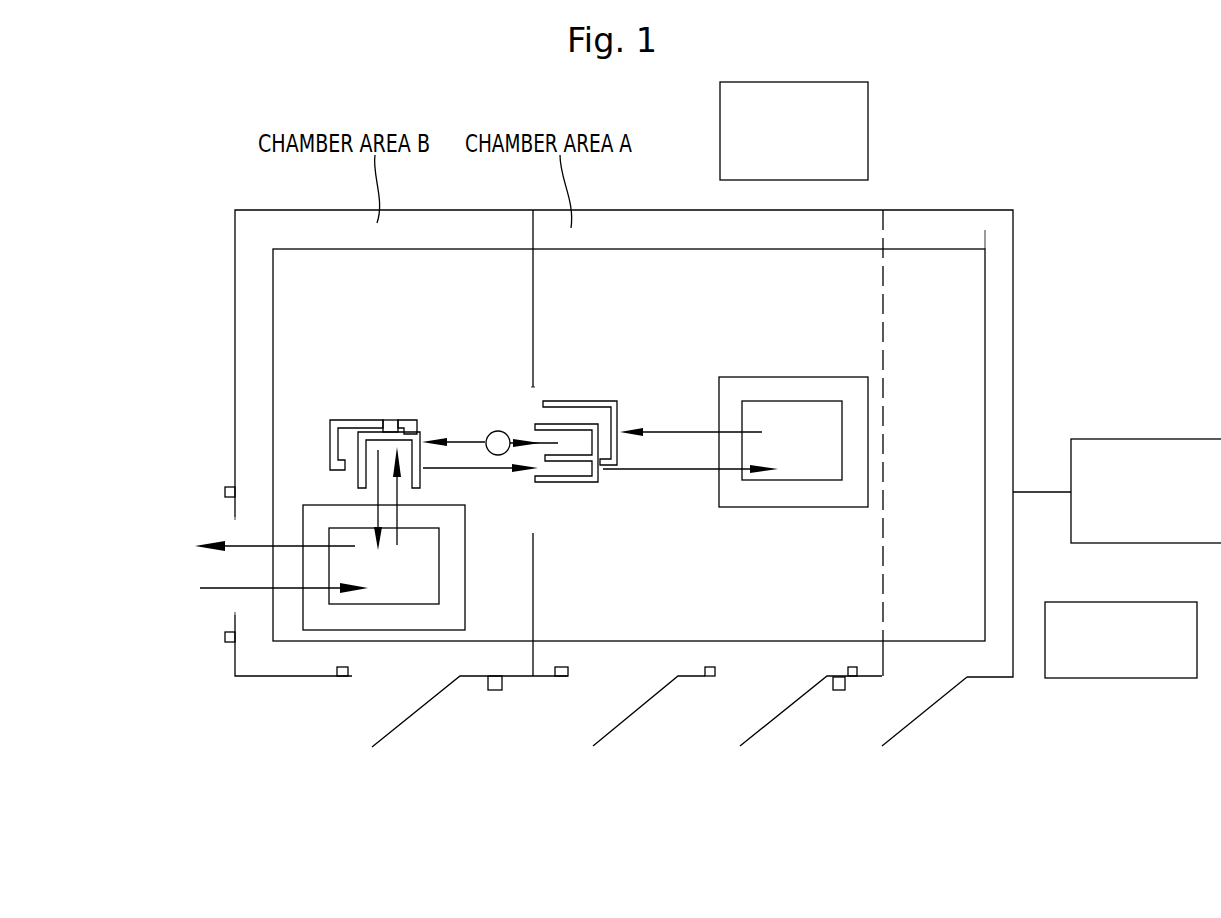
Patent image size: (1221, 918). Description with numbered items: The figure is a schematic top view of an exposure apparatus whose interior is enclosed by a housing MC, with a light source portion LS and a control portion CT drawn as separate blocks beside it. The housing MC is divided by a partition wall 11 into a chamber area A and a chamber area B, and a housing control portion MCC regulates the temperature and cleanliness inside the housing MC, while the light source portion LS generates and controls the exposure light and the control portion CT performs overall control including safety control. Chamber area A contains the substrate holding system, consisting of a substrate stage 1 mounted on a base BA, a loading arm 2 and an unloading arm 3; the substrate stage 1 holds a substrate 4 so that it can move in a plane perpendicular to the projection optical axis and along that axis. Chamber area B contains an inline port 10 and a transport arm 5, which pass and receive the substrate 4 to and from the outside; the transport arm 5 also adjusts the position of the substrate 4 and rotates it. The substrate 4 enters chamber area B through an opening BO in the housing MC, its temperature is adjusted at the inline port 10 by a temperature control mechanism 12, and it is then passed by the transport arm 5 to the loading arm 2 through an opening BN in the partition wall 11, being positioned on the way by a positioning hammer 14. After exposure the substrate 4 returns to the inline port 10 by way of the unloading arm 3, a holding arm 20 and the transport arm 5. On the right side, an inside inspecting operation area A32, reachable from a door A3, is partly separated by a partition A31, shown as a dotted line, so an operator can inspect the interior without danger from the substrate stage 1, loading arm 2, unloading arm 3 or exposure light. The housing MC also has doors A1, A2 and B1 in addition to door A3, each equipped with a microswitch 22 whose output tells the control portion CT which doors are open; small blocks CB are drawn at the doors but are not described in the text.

The substrate stage 1 is at (778, 388).
The loading arm 2 is at (596, 483).
The unloading arm 3 is at (612, 402).
The substrate 4 is at (822, 418).
The transport arm 5 is at (385, 421).
The inline port 10 is at (455, 520).
The partition wall 11 is at (534, 322).
The temperature control mechanism 12 is at (428, 576).
The positioning hammer 14 is at (338, 420).
The holding arm 20 is at (498, 431).
The microswitch 22 is at (566, 667).
The light source portion LS is at (868, 108).
The housing MC is at (1015, 298).
The base BA is at (967, 390).
The partition A31 is at (884, 285).
The inside inspecting operation area A32 is at (985, 232).
The housing control portion MCC is at (1111, 440).
The control portion CT is at (1100, 610).
The opening BN is at (533, 393).
The opening BO is at (235, 527).
The door B1 is at (418, 710).
The door A1 is at (642, 705).
The door A2 is at (788, 708).
The door A3 is at (918, 717).
The door sensor block CB is at (495, 690).